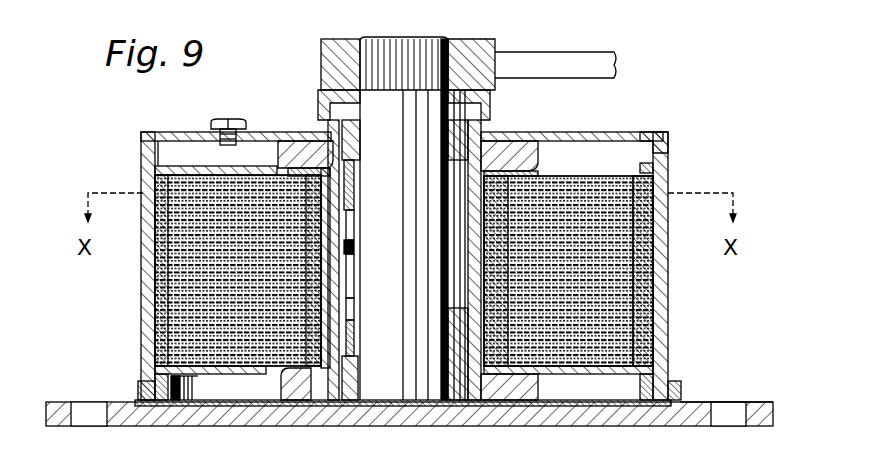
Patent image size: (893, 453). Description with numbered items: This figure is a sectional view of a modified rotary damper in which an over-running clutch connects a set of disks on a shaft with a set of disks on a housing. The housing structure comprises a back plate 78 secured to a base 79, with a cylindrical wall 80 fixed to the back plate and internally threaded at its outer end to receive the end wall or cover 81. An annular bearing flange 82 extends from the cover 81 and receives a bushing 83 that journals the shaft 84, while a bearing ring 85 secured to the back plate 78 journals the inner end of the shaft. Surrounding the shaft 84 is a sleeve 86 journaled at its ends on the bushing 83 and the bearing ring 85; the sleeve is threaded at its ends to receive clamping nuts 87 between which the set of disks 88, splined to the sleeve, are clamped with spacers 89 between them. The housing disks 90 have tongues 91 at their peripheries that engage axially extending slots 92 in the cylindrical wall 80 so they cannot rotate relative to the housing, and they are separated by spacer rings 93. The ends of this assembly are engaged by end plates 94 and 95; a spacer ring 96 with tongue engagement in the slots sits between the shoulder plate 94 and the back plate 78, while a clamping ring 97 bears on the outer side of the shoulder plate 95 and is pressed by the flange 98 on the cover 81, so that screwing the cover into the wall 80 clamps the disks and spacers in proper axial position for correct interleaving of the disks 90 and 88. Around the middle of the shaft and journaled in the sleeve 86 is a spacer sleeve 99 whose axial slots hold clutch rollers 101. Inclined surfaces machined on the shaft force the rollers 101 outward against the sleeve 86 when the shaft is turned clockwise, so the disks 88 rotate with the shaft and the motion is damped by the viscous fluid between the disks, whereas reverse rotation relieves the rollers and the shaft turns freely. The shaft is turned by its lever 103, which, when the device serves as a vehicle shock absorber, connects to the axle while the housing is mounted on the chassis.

The back plate 78 is at (262, 398).
The base 79 is at (708, 388).
The cylindrical wall 80 is at (135, 233).
The end wall or cover 81 is at (598, 125).
The annular bearing flange 82 is at (480, 104).
The bushing 83 is at (340, 138).
The shaft 84 is at (432, 18).
The bearing ring 85 is at (350, 367).
The sleeve 86 is at (340, 224).
The clamping nuts 87 is at (300, 398).
The disks 88 is at (340, 287).
The spacers 89 is at (346, 300).
The housing disks 90 is at (660, 249).
The tongues 91 is at (660, 265).
The axially extending slots 92 is at (662, 278).
The spacer rings 93 is at (147, 180).
The end plate 94 is at (232, 372).
The end plate 95 is at (222, 164).
The spacer ring 96 is at (142, 378).
The clamping ring 97 is at (155, 156).
The flange 98 is at (641, 125).
The spacer sleeve 99 is at (345, 335).
The clutch rollers 101 is at (346, 205).
The lever 103 is at (582, 45).